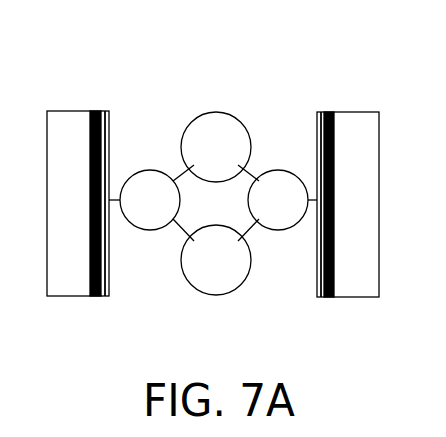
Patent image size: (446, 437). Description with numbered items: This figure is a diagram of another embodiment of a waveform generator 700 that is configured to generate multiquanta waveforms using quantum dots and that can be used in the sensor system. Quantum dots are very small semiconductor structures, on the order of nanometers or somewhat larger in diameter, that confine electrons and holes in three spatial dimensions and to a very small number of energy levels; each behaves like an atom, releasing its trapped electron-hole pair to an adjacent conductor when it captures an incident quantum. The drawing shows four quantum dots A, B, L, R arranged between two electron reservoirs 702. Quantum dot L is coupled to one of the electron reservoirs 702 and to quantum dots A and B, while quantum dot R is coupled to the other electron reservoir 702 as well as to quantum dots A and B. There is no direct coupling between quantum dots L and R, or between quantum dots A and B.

The waveform generator 700 is at (195, 157).
The electron reservoirs 702 is at (80, 110).
The quantum dot A is at (216, 147).
The quantum dot B is at (216, 260).
The quantum dot L is at (150, 200).
The quantum dot R is at (278, 200).